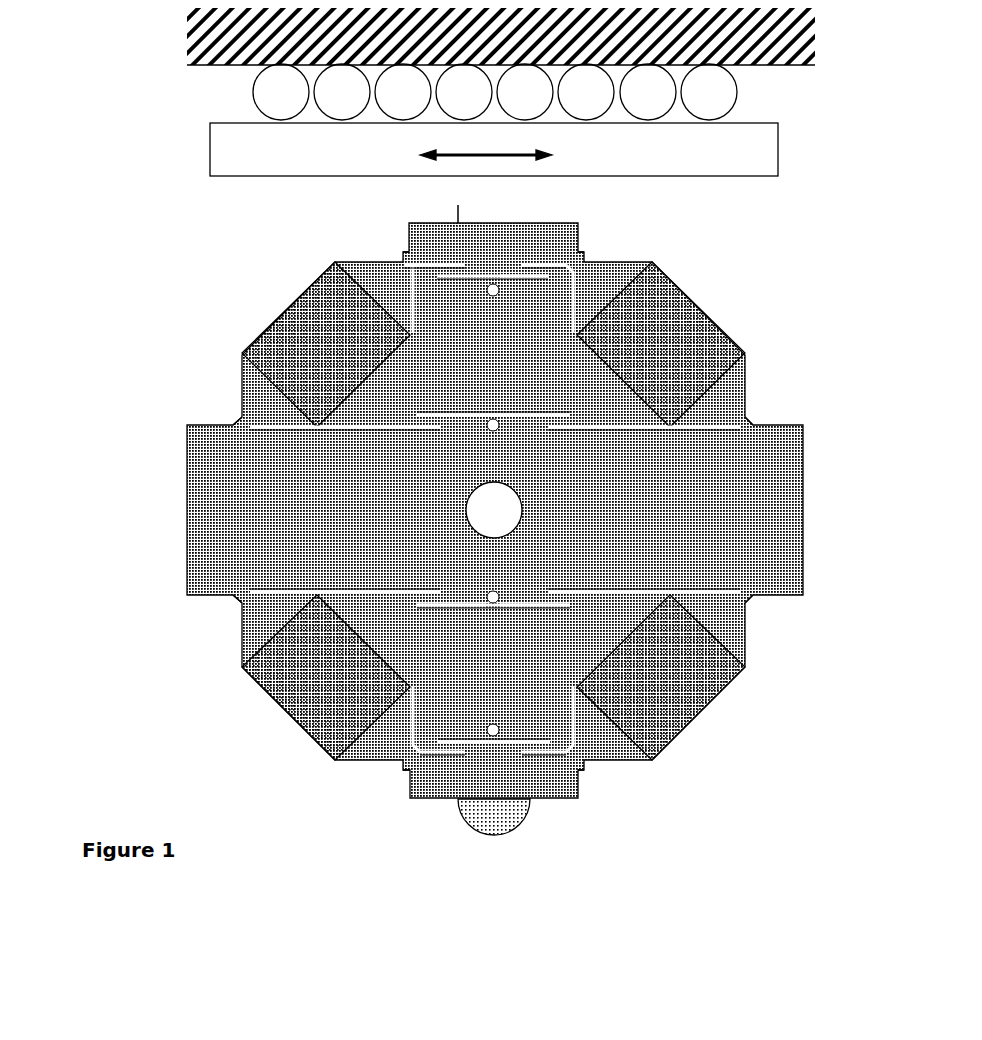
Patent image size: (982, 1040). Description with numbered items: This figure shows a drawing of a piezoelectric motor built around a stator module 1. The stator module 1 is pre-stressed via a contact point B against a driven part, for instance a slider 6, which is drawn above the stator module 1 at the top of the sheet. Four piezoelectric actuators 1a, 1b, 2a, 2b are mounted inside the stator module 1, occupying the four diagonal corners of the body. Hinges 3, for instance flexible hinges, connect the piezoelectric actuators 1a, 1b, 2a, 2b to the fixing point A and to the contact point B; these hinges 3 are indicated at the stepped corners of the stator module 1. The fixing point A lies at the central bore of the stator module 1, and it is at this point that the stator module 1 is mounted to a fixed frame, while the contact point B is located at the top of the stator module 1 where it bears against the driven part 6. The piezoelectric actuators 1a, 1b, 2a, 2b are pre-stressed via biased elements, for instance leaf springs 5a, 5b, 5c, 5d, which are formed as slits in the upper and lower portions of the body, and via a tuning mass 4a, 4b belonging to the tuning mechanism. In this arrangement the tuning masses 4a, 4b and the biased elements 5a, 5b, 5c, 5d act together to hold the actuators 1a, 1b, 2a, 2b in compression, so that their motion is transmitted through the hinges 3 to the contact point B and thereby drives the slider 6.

The stator module 1 is at (280, 497).
The piezoelectric actuator 1a is at (326, 344).
The piezoelectric actuator 1b is at (661, 344).
The piezoelectric actuator 2a is at (326, 677).
The piezoelectric actuator 2b is at (661, 677).
The hinges 3 is at (390, 238).
The tuning mass 4a is at (540, 371).
The tuning mass 4b is at (588, 640).
The biased element 5a is at (433, 262).
The biased element 5b is at (533, 276).
The biased element 5c is at (427, 608).
The biased element 5d is at (537, 612).
The driven part 6 is at (638, 161).
The fixing point A is at (436, 510).
The contact point B is at (473, 198).